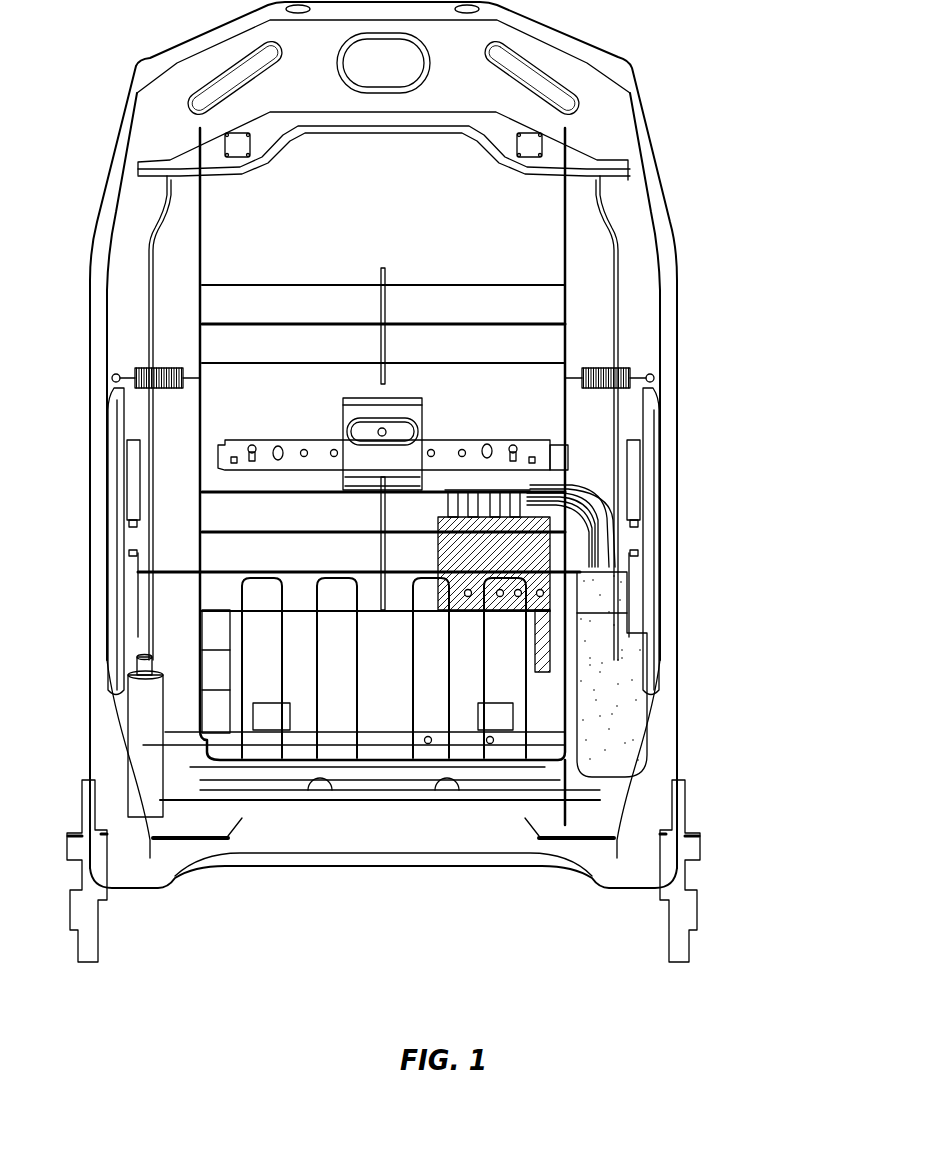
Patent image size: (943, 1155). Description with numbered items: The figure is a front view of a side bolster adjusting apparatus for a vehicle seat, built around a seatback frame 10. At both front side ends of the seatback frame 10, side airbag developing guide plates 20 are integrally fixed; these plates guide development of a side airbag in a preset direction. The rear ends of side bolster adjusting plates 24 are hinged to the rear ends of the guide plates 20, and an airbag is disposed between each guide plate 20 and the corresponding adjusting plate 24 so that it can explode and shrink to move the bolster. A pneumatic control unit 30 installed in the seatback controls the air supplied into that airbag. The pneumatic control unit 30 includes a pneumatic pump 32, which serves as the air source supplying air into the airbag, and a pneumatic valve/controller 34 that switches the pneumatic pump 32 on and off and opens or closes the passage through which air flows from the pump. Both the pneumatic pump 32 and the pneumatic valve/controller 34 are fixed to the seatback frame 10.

The seatback frame 10 is at (635, 250).
The side airbag developing guide plate 20 is at (665, 433).
The side bolster adjusting plate 24 is at (647, 503).
The pneumatic control unit 30 is at (496, 751).
The pneumatic pump 32 is at (613, 737).
The pneumatic valve/controller 34 is at (480, 555).